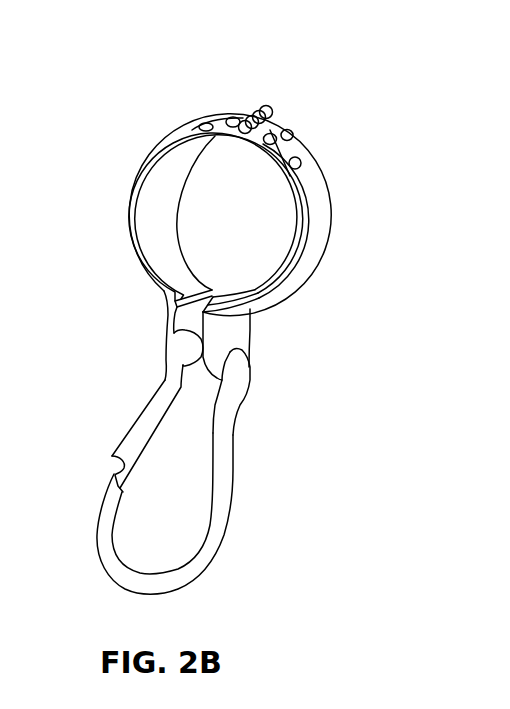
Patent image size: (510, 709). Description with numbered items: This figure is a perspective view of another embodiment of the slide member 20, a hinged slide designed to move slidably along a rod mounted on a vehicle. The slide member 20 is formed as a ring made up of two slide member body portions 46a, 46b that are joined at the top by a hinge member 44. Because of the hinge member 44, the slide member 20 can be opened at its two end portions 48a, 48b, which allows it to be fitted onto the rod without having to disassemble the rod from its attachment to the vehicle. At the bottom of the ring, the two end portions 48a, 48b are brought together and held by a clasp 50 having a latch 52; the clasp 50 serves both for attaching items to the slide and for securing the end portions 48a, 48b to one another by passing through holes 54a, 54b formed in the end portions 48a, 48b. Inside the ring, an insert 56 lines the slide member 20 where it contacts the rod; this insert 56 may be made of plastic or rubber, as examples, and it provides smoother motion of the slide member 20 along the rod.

The slide member 20 is at (329, 217).
The hinge member 44 is at (267, 105).
The slide member body portion 46a is at (146, 163).
The slide member body portion 46b is at (328, 184).
The end portion 48a is at (164, 327).
The end portion 48b is at (250, 332).
The clasp 50 is at (233, 478).
The latch 52 is at (112, 456).
The hole 54a is at (176, 351).
The hole 54b is at (231, 351).
The insert 56 is at (172, 231).